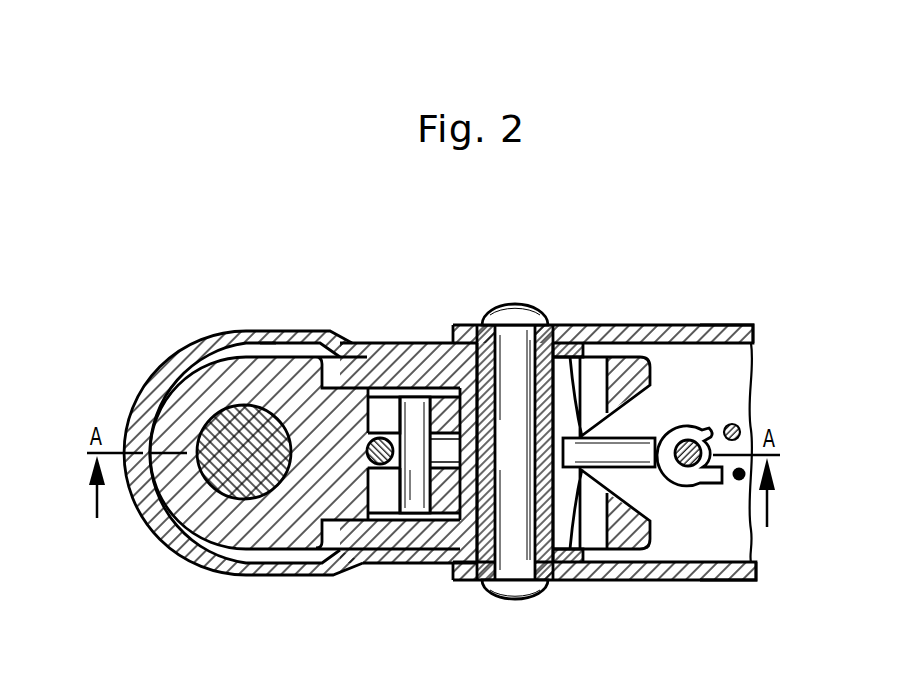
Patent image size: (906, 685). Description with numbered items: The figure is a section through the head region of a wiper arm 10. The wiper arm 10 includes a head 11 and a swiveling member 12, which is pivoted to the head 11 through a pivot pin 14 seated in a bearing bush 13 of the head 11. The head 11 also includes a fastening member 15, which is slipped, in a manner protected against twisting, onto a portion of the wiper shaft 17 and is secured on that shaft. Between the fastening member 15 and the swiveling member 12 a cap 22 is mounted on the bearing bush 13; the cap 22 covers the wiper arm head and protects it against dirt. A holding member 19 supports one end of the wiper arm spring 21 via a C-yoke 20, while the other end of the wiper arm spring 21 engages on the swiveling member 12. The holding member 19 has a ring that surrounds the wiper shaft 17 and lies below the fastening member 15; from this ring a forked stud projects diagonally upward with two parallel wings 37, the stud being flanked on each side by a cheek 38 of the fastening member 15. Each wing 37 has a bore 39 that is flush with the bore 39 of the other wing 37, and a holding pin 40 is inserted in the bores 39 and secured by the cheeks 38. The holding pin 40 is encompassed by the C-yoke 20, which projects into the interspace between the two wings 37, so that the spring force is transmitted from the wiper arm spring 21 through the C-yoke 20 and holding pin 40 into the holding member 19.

The wiper arm 10 is at (676, 310).
The head 11 is at (268, 357).
The swiveling member 12 is at (738, 332).
The bearing bush 13 is at (548, 548).
The pivot pin 14 is at (518, 552).
The fastening member 15 is at (627, 382).
The wiper shaft 17 is at (227, 481).
The holding member 19 is at (176, 486).
The C-yoke 20 is at (633, 452).
The wiper arm spring 21 is at (737, 478).
The cap 22 is at (185, 348).
The wings 37 is at (378, 403).
The cheeks 38 is at (388, 347).
The bore 39 is at (420, 378).
The holding pin 40 is at (415, 413).